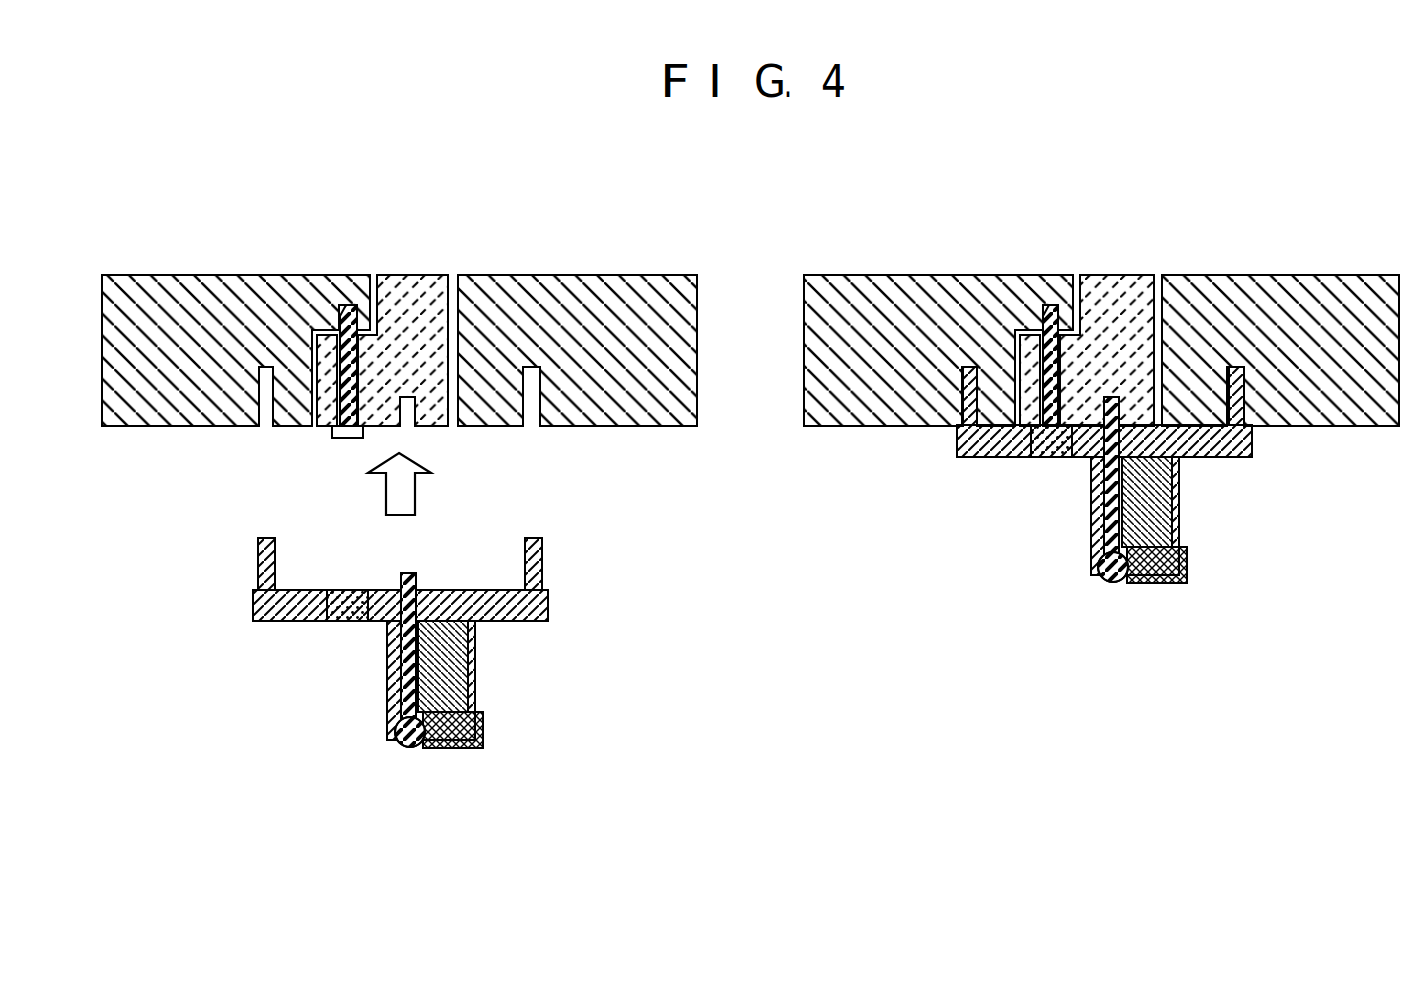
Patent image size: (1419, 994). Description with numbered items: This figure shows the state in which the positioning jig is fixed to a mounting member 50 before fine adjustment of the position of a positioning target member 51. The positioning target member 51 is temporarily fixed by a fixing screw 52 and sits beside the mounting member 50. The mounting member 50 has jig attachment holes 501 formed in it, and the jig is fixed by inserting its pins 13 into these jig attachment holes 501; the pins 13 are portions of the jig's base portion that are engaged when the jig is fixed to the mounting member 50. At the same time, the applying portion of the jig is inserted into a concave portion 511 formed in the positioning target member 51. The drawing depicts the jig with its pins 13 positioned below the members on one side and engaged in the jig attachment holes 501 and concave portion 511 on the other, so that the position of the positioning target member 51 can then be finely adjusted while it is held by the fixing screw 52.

The mounting member 50 is at (212, 283).
The jig attachment holes 501 is at (260, 396).
The positioning target member 51 is at (419, 283).
The concave portion 511 is at (437, 430).
The fixing screw 52 is at (335, 440).
The pins 13 is at (258, 560).